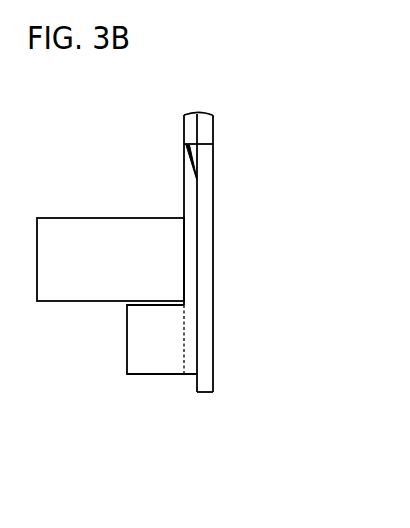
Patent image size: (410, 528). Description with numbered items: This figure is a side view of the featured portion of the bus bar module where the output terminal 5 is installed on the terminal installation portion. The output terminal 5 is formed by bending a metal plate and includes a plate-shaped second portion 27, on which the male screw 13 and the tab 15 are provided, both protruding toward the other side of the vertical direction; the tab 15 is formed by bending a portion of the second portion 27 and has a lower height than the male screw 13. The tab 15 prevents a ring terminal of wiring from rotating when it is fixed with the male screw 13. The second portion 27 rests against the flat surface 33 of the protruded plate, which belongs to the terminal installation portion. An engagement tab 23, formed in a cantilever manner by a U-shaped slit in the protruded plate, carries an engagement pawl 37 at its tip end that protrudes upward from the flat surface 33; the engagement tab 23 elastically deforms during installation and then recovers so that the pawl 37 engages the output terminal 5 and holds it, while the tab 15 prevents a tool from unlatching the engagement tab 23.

The output terminal 5 is at (190, 268).
The male screw 13 is at (88, 240).
The tab 15 is at (162, 375).
The engagement tab 23 is at (210, 172).
The second portion 27 is at (191, 303).
The flat surface 33 is at (195, 338).
The engagement pawl 37 is at (185, 168).